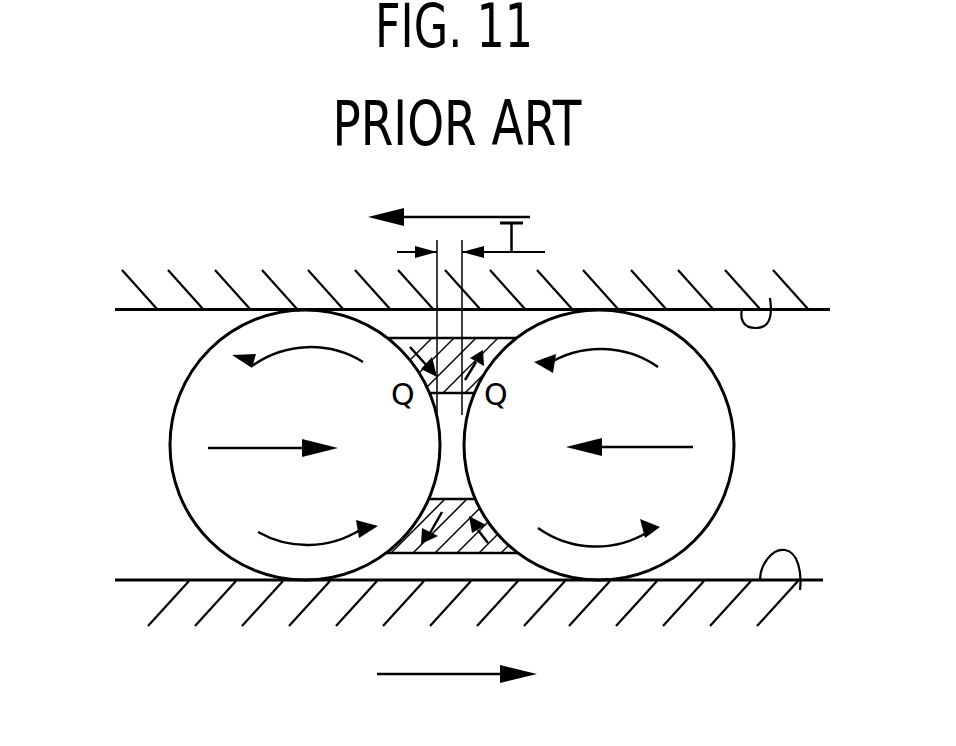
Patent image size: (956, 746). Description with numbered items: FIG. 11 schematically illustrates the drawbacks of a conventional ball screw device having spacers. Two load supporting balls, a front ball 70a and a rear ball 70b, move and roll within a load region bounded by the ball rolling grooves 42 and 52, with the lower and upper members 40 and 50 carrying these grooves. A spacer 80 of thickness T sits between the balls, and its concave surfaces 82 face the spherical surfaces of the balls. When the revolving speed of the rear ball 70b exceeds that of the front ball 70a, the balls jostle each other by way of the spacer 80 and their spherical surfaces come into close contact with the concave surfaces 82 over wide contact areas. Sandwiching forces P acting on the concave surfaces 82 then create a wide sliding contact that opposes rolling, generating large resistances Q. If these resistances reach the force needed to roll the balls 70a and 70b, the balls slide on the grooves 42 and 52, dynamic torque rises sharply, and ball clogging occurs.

The lower plate 40 is at (230, 612).
The ball rolling groove 42 is at (800, 590).
The upper plate 50 is at (253, 282).
The ball rolling groove 52 is at (770, 298).
The front ball 70a is at (200, 402).
The rear ball 70b is at (702, 400).
The spacer 80 is at (455, 538).
The concave surface 82 is at (418, 546).